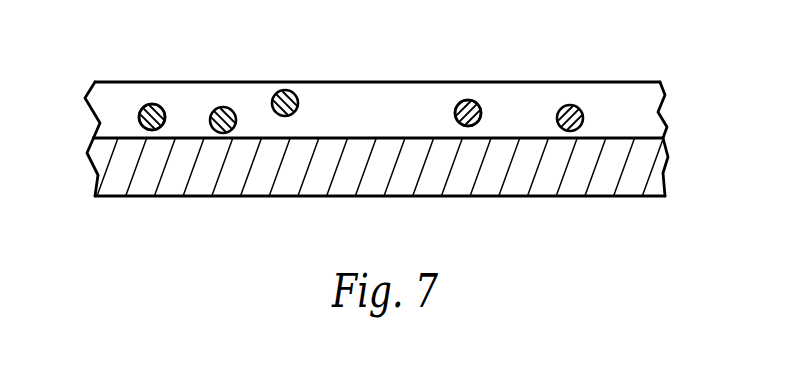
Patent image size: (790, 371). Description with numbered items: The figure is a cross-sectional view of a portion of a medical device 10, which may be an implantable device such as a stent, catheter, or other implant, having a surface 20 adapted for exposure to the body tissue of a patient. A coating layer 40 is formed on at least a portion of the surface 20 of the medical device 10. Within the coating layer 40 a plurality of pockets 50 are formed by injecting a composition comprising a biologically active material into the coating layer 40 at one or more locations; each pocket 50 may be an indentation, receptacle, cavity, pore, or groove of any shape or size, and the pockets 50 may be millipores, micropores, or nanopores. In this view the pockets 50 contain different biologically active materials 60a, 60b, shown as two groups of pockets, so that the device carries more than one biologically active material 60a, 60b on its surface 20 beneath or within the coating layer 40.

The medical device 10 is at (670, 169).
The surface 20 is at (648, 127).
The coating layer 40 is at (642, 100).
The pocket 50 is at (148, 101).
The biologically active material 60a is at (162, 108).
The biologically active material 60b is at (477, 103).